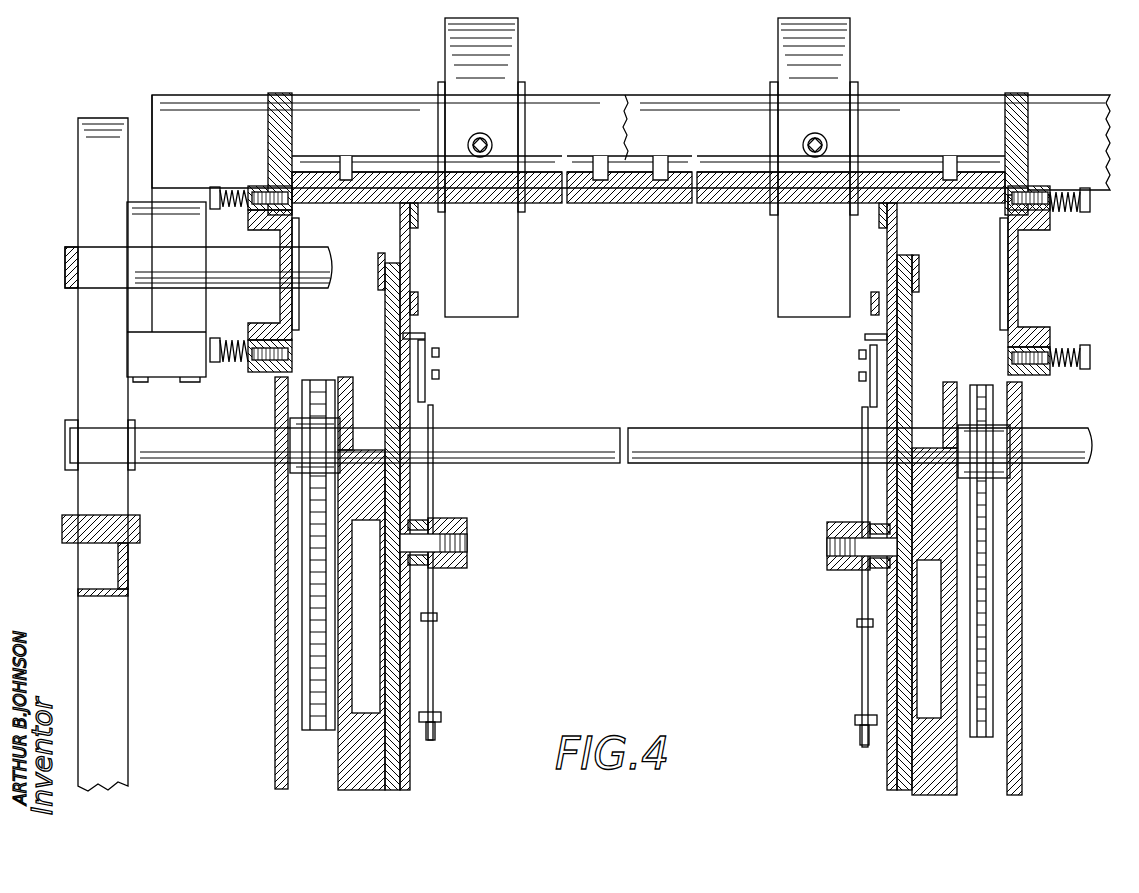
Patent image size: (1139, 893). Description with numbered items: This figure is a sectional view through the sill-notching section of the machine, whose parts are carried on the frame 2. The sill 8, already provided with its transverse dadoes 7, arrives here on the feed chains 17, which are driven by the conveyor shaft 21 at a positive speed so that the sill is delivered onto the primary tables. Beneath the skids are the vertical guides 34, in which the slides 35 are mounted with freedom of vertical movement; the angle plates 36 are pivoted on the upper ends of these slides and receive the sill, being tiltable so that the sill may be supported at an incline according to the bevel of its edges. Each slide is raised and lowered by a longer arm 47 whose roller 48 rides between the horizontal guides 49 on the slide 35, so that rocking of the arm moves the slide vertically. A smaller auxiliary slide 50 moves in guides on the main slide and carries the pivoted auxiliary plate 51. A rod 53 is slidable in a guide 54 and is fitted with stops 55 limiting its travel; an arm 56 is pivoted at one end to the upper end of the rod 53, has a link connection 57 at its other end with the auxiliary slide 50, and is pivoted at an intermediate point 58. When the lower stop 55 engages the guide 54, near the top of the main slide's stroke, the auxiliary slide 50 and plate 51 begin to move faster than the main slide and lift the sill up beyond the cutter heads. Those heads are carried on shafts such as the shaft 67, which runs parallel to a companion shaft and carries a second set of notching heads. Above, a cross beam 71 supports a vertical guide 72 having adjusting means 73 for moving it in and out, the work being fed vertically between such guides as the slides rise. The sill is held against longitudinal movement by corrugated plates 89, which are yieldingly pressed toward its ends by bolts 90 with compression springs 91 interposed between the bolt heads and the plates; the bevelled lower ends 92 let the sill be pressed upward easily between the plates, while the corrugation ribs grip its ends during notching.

The frame 2 is at (90, 165).
The dadoes 7 is at (345, 186).
The sill 8 is at (658, 195).
The feed chains 17 is at (300, 590).
The conveyor shaft 21 is at (668, 466).
The vertical guides 34 is at (278, 615).
The slides 35 is at (392, 685).
The angle plates 36 is at (384, 264).
The longer arm 47 is at (468, 530).
The roller 48 is at (470, 558).
The horizontal guides 49 is at (428, 524).
The auxiliary slide 50 is at (410, 266).
The auxiliary plate 51 is at (418, 216).
The rod 53 is at (435, 486).
The guide 54 is at (440, 718).
The stops 55 is at (440, 617).
The arm 56 is at (440, 376).
The link connection 57 is at (428, 340).
The intermediate pivot 58 is at (440, 388).
The shaft 67 is at (72, 277).
The cross beam 71 is at (666, 95).
The vertical guide 72 is at (500, 40).
The adjusting means 73 is at (493, 146).
The corrugated plates 89 is at (286, 264).
The bolts 90 is at (218, 192).
The compression springs 91 is at (233, 190).
The bevelled lower ends 92 is at (292, 322).